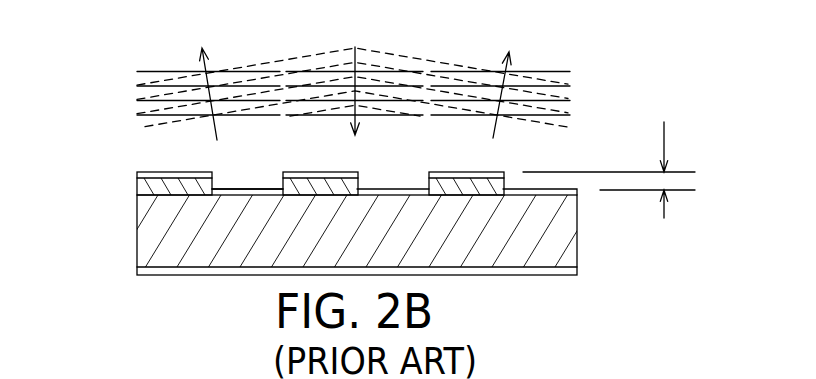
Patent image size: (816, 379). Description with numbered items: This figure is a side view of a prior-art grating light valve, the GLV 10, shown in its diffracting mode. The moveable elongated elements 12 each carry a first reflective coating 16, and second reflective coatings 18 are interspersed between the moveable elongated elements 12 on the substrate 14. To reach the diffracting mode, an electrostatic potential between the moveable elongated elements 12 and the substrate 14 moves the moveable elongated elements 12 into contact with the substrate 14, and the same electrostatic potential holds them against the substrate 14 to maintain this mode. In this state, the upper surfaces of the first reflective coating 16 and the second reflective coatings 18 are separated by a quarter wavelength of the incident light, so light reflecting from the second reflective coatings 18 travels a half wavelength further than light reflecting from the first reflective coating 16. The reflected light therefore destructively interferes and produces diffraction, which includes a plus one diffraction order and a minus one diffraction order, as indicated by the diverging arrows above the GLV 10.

The GLV 10 is at (399, 144).
The moveable elongated elements 12 is at (137, 189).
The substrate 14 is at (137, 233).
The first reflective coating 16 is at (157, 172).
The second reflective coatings 18 is at (233, 189).